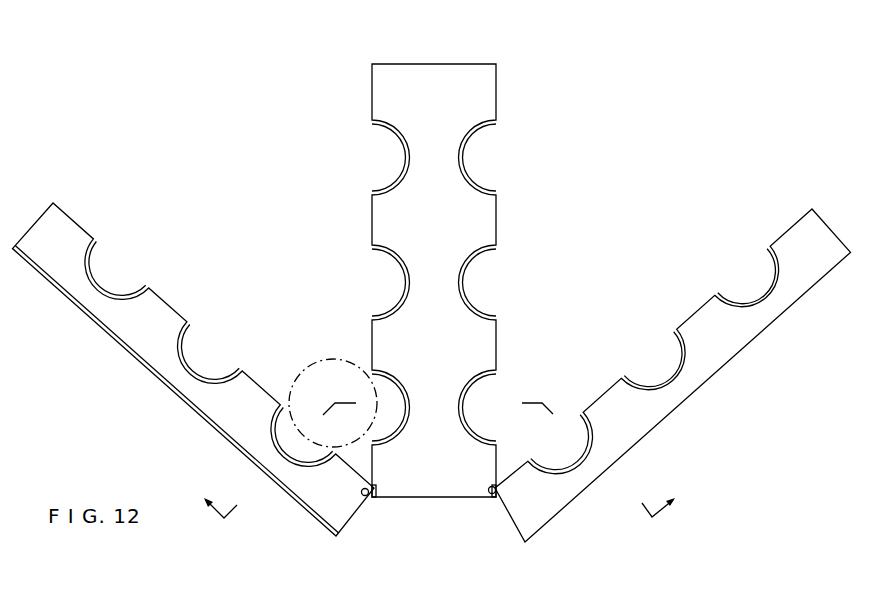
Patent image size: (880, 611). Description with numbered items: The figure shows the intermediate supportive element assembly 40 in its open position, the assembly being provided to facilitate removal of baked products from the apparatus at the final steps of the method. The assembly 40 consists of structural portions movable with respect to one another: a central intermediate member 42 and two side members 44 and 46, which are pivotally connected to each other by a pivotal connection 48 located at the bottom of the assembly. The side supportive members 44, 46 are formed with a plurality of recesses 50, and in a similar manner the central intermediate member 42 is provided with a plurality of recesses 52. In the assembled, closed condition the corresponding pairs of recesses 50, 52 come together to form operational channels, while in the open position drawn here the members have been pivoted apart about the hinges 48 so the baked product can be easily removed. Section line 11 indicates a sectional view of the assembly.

The intermediate supportive element assembly 40 is at (596, 69).
The central intermediate member 42 is at (422, 64).
The side member 44 is at (40, 212).
The side member 46 is at (823, 215).
The pivotal connection 48 is at (488, 490).
The recesses 50 is at (90, 262).
The recesses 52 is at (406, 166).
The section line 11 is at (437, 515).